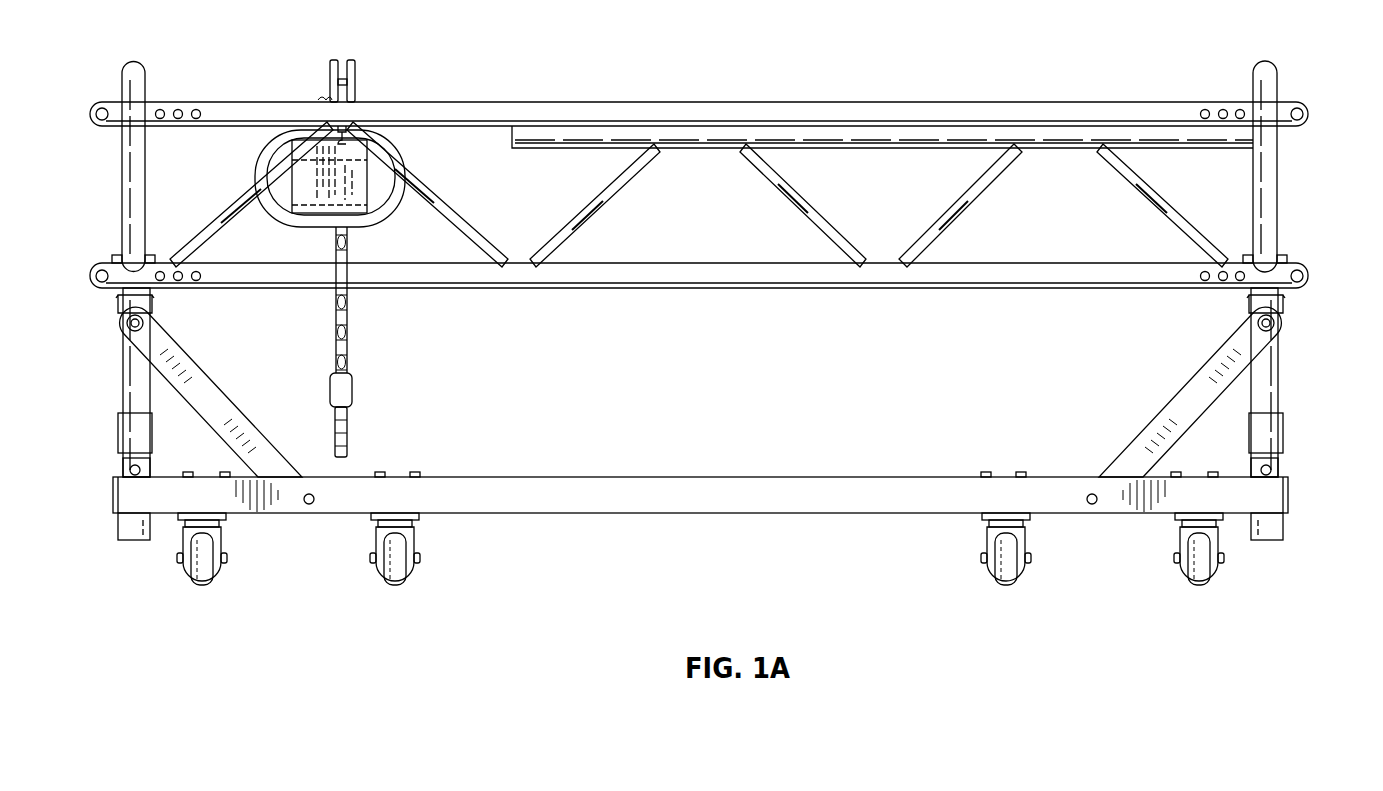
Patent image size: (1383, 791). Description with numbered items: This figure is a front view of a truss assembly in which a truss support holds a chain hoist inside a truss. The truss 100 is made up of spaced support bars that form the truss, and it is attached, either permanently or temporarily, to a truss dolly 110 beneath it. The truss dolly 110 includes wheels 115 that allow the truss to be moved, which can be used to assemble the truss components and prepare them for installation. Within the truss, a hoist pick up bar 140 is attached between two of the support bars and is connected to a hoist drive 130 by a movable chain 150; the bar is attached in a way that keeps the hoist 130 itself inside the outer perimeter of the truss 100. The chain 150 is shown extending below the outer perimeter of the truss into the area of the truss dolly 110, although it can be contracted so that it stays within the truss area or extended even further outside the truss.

The truss 100 is at (1280, 182).
The truss dolly 110 is at (1280, 372).
The wheels 115 is at (1196, 586).
The hoist drive 130 is at (362, 170).
The hoist pick up bar 140 is at (330, 86).
The movable chain 150 is at (333, 345).